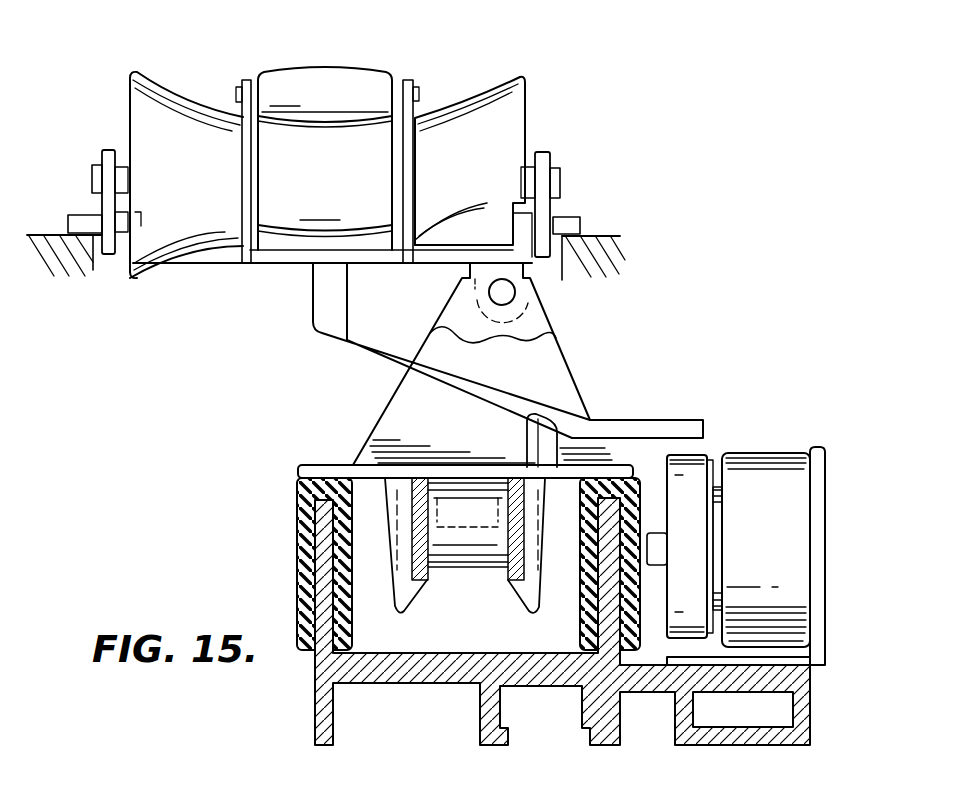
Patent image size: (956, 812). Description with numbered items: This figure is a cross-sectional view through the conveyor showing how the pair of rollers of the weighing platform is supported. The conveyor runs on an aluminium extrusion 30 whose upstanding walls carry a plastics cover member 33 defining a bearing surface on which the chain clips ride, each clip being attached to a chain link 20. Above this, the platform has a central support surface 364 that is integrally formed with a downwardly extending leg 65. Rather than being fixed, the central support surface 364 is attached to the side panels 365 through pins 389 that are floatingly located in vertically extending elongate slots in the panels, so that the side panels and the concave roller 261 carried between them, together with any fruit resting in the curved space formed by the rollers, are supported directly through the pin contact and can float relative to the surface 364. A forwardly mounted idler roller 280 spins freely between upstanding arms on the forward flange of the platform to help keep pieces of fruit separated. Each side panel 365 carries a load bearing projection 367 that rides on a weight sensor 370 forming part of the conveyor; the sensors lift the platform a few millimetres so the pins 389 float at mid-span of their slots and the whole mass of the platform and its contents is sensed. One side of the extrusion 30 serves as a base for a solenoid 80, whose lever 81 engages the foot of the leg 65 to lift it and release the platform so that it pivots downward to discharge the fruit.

The chain link 20 is at (473, 542).
The aluminium extrusion 30 is at (447, 672).
The cover member 33 is at (298, 522).
The leg 65 is at (333, 323).
The solenoid 80 is at (786, 530).
The lever 81 is at (683, 535).
The concave roller 261 is at (210, 143).
The idler roller 280 is at (322, 90).
The central support surface 364 is at (222, 265).
The side panel 365 is at (108, 148).
The load bearing projection 367 is at (77, 224).
The weight sensor 370 is at (43, 238).
The pin 389 is at (98, 210).